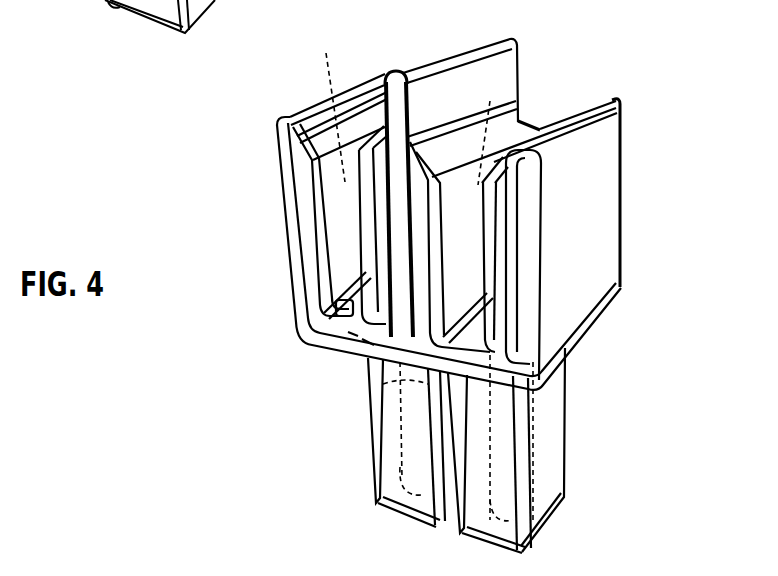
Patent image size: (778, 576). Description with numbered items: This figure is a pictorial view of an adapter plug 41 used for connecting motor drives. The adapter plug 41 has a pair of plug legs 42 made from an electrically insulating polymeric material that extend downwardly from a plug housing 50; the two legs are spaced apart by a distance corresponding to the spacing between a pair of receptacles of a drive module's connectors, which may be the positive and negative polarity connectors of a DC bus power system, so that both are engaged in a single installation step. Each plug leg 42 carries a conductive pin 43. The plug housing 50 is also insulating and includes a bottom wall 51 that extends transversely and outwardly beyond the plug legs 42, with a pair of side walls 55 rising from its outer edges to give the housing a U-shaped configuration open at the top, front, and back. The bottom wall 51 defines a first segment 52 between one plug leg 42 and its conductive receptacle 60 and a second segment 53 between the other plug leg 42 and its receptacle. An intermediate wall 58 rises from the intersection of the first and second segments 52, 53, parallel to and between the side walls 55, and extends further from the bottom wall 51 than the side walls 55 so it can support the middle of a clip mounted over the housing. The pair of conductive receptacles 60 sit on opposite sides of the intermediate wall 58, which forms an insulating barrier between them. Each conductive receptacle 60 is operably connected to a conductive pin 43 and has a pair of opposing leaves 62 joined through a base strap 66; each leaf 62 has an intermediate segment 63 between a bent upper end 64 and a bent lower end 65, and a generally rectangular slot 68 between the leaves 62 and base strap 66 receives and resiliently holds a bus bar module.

The adapter plug 41 is at (657, 163).
The plug leg 42 is at (376, 478).
The conductive pin 43 is at (390, 442).
The plug housing 50 is at (284, 303).
The bottom wall 51 is at (366, 343).
The first segment 52 is at (457, 357).
The second segment 53 is at (352, 334).
The side wall 55 is at (292, 209).
The intermediate wall 58 is at (477, 46).
The conductive receptacle 60 is at (384, 117).
The leaf 62 is at (354, 194).
The intermediate segment 63 is at (318, 268).
The bent upper end 64 is at (322, 140).
The bent lower end 65 is at (330, 287).
The base strap 66 is at (345, 337).
The slot 68 is at (578, 57).